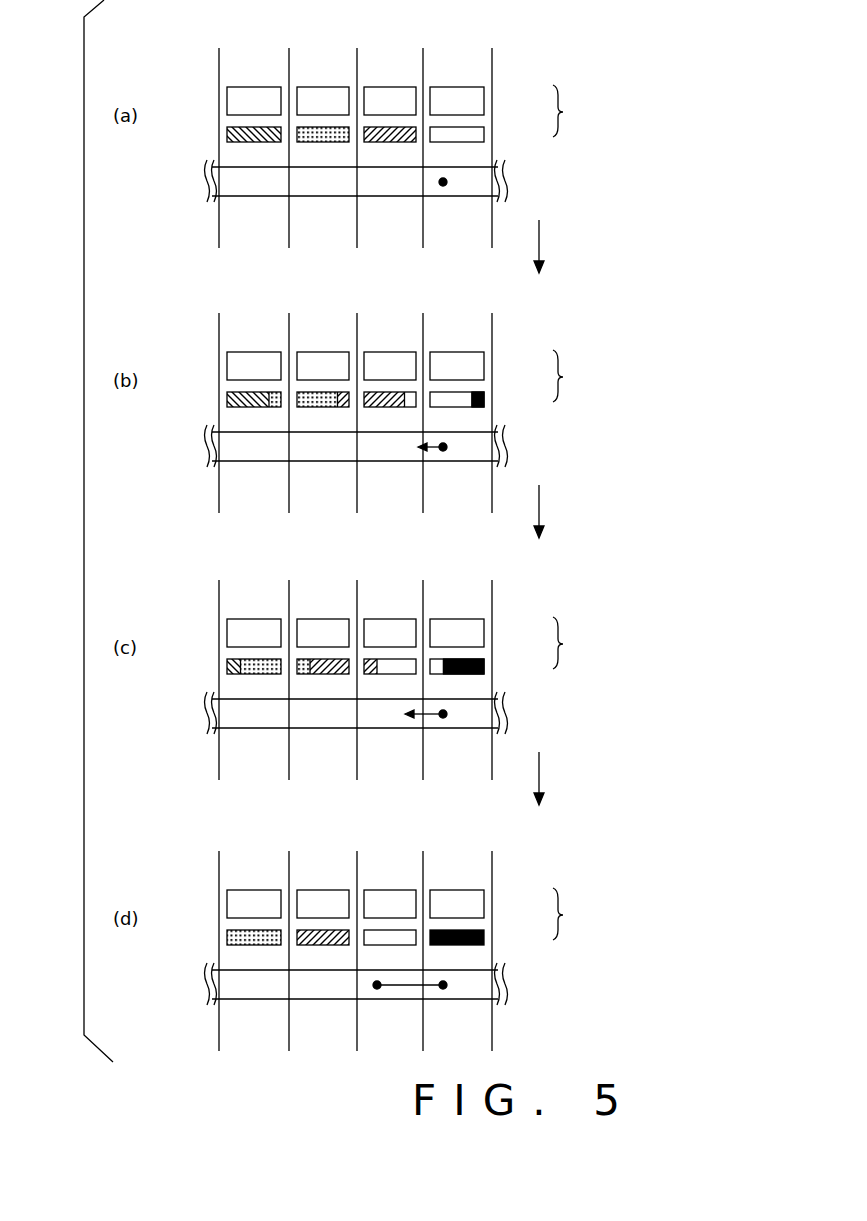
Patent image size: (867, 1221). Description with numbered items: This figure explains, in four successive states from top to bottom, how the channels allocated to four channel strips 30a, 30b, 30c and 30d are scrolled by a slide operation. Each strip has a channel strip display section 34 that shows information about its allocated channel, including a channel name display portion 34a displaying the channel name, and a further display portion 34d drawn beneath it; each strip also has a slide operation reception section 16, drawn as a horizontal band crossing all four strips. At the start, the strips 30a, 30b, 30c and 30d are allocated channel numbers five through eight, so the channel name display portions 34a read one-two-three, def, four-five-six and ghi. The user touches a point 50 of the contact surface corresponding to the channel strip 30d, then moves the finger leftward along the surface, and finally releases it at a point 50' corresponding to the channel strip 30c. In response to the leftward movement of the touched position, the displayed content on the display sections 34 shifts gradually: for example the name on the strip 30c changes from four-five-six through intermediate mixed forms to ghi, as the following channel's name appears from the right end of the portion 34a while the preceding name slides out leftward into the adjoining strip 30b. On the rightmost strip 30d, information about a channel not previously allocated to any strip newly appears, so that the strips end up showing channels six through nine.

The channel strip 30a is at (256, 51).
The channel strip 30b is at (324, 51).
The channel strip 30c is at (392, 51).
The channel strip 30d is at (462, 52).
The channel strip display section 34 is at (574, 512).
The channel name display portion 34a is at (484, 100).
The program progress bar 34d is at (484, 133).
The slide operation reception section 16 is at (484, 182).
The point 50 is at (427, 608).
The point 50' is at (390, 1010).